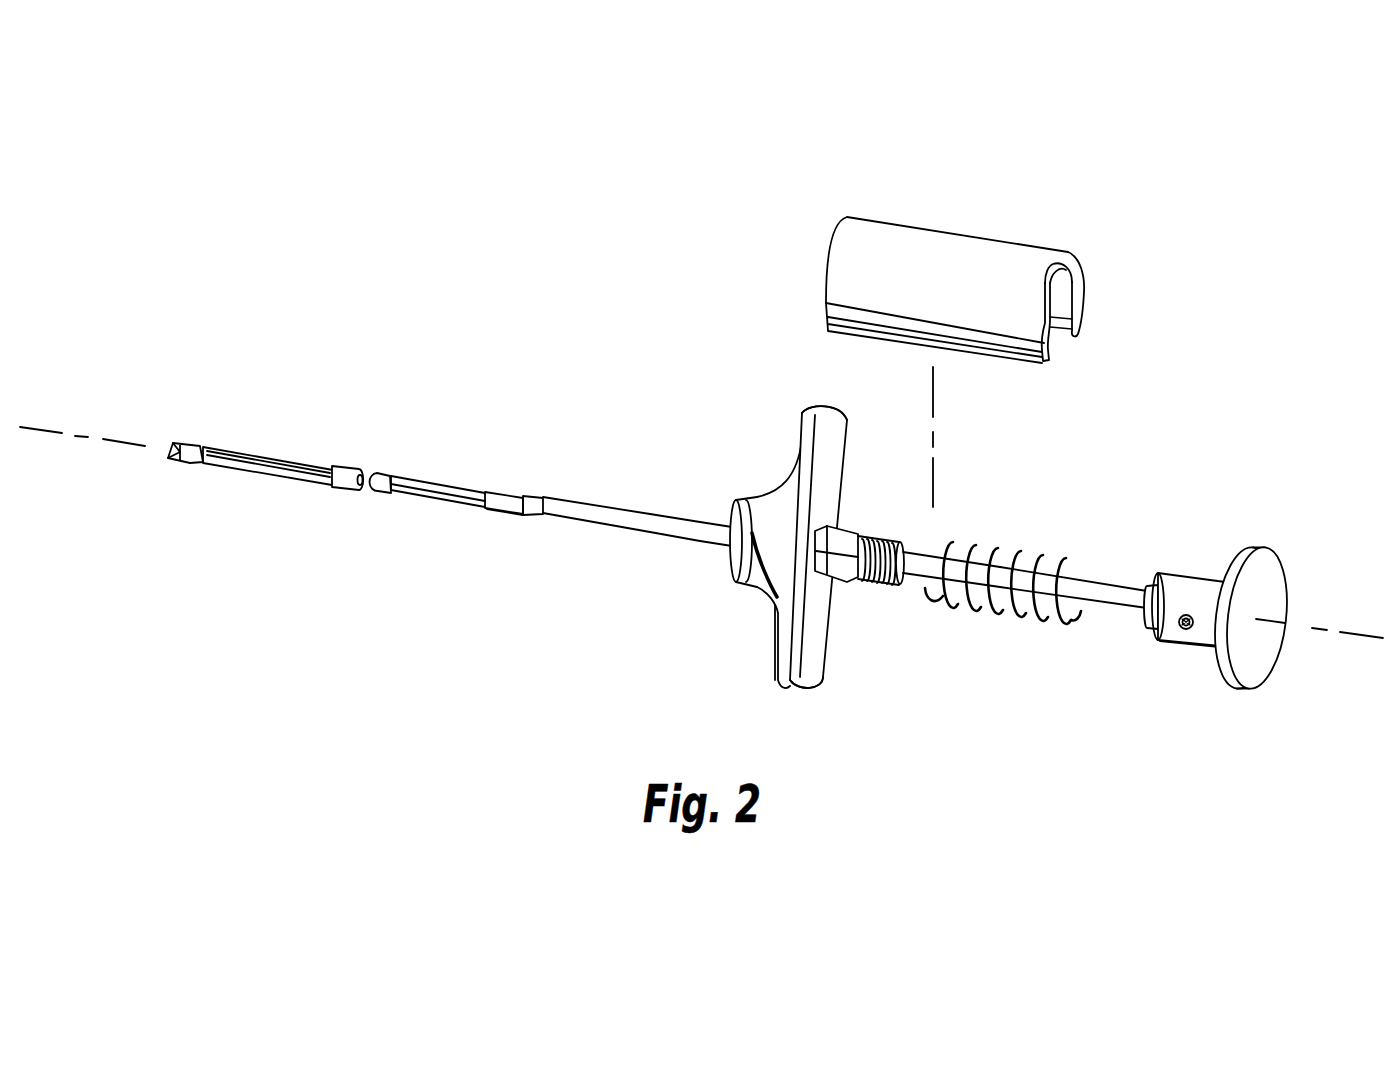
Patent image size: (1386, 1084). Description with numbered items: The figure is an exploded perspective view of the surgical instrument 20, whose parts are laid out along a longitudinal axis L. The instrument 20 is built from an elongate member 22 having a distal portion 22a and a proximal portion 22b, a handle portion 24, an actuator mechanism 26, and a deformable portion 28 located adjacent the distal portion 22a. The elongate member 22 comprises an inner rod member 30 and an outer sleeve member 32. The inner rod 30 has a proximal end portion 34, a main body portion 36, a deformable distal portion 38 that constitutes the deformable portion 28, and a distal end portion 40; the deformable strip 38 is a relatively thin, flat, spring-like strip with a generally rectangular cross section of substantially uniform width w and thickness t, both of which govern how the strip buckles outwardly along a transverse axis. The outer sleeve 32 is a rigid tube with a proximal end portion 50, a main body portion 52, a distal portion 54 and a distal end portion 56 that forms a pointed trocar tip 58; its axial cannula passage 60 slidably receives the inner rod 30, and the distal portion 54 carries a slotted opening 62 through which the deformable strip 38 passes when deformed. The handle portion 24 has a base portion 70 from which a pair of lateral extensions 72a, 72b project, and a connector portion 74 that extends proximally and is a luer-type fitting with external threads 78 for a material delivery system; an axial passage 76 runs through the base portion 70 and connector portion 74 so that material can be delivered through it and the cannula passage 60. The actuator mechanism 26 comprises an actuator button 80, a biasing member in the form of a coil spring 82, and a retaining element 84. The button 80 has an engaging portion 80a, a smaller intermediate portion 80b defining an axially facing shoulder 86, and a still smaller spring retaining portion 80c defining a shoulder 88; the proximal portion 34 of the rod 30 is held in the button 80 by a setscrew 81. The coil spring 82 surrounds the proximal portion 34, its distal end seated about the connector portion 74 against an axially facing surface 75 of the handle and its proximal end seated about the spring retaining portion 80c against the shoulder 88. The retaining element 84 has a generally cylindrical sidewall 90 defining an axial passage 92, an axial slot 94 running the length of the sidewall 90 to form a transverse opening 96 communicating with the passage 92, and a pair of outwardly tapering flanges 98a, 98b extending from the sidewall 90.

The instrument 20 is at (568, 415).
The elongate member 22 is at (566, 483).
The distal portion 22a is at (228, 485).
The proximal portion 22b is at (690, 560).
The handle portion 24 is at (833, 710).
The actuator mechanism 26 is at (1115, 697).
The deformable portion 28 is at (475, 480).
The inner rod member 30 is at (503, 520).
The outer sleeve member 32 is at (598, 548).
The proximal end portion 34 is at (1096, 580).
The main body portion 36 is at (929, 551).
The deformable distal portion 38 is at (433, 480).
The distal end portion 40 is at (383, 470).
The proximal end portion 50 is at (695, 522).
The main body portion 52 is at (534, 497).
The distal portion 54 is at (303, 488).
The distal end portion 56 is at (193, 440).
The trocar 58 is at (170, 462).
The axial cannula passage 60 is at (362, 487).
The slotted opening 62 is at (290, 455).
The base portion 70 is at (758, 498).
The lateral extension 72a is at (808, 410).
The lateral extension 72b is at (778, 676).
The connector portion 74 is at (855, 530).
The axially facing surface 75 is at (810, 626).
The axial passage 76 is at (897, 583).
The external threads 78 is at (893, 545).
The actuator button 80 is at (1258, 530).
The engaging portion 80a is at (1264, 668).
The intermediate portion 80b is at (1185, 648).
The spring retaining portion 80c is at (1142, 626).
The setscrew 81 is at (1186, 631).
The biasing member 82 is at (1028, 540).
The retaining element 84 is at (1040, 222).
The axially-facing shoulder 86 is at (1215, 672).
The axially-facing shoulder 88 is at (1163, 576).
The cylindrical sidewall 90 is at (943, 247).
The axial passage 92 is at (1062, 295).
The axial slot 94 is at (1063, 372).
The transverse opening 96 is at (1070, 361).
The flange 98a is at (1035, 350).
The flange 98b is at (1080, 320).
The longitudinal axis L is at (48, 430).
The width w is at (439, 521).
The thickness t is at (406, 461).